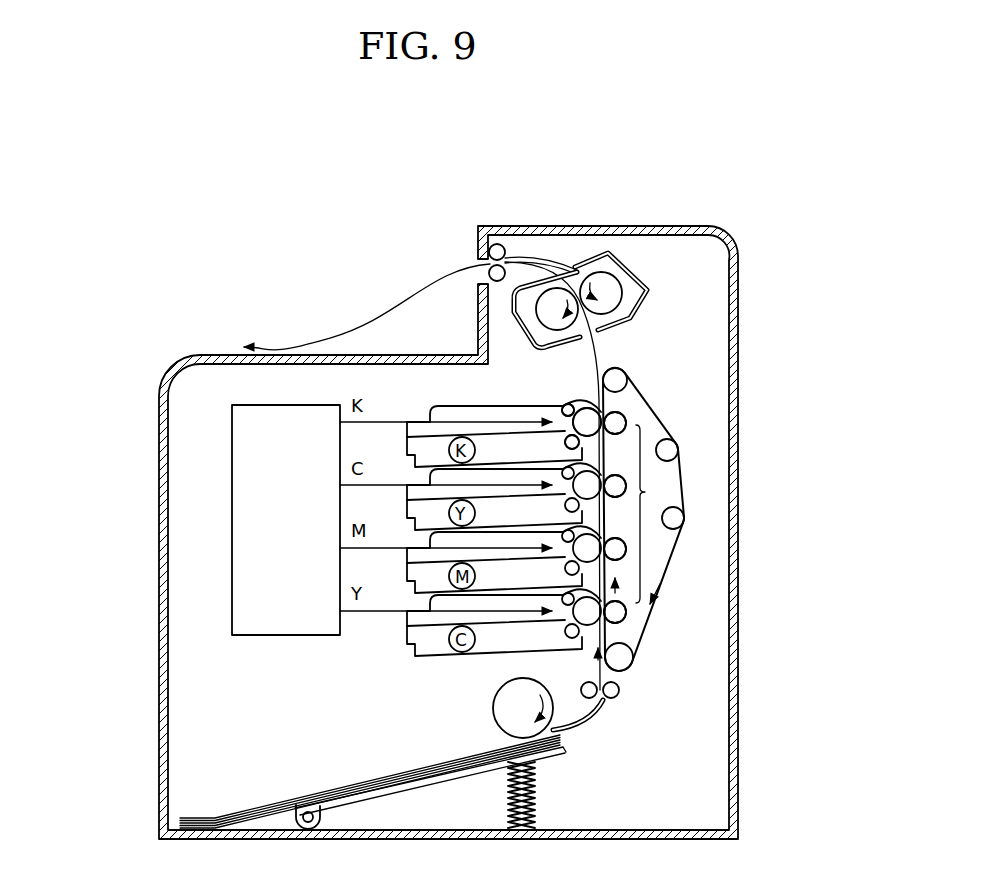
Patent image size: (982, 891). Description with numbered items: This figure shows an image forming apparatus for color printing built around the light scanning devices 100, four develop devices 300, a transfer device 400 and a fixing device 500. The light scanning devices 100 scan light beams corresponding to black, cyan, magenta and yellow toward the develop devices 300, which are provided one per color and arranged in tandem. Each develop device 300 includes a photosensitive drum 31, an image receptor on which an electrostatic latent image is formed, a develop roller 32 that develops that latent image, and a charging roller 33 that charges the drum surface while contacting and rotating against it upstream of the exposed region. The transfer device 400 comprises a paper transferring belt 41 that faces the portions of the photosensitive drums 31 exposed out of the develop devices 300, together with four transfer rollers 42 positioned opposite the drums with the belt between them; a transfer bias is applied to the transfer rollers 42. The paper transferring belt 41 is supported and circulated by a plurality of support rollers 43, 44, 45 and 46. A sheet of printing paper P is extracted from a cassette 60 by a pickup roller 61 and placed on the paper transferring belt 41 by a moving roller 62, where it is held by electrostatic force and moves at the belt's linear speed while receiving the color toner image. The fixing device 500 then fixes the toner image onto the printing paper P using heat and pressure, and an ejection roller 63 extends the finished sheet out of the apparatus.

The light scanning device 100 is at (216, 527).
The develop devices 300 is at (524, 397).
The photosensitive drum 31 is at (583, 418).
The develop roller 32 is at (550, 428).
The charging roller 33 is at (560, 402).
The transfer device 400 is at (699, 503).
The paper transferring belt 41 is at (662, 417).
The transfer rollers 42 is at (641, 517).
The support roller 43 is at (622, 661).
The support roller 44 is at (627, 381).
The support roller 45 is at (684, 519).
The support roller 46 is at (678, 450).
The fixing device 500 is at (667, 293).
The cassette 60 is at (399, 742).
The pickup roller 61 is at (521, 708).
The moving roller 62 is at (586, 689).
The ejection roller 63 is at (498, 244).
The printing paper P is at (390, 777).